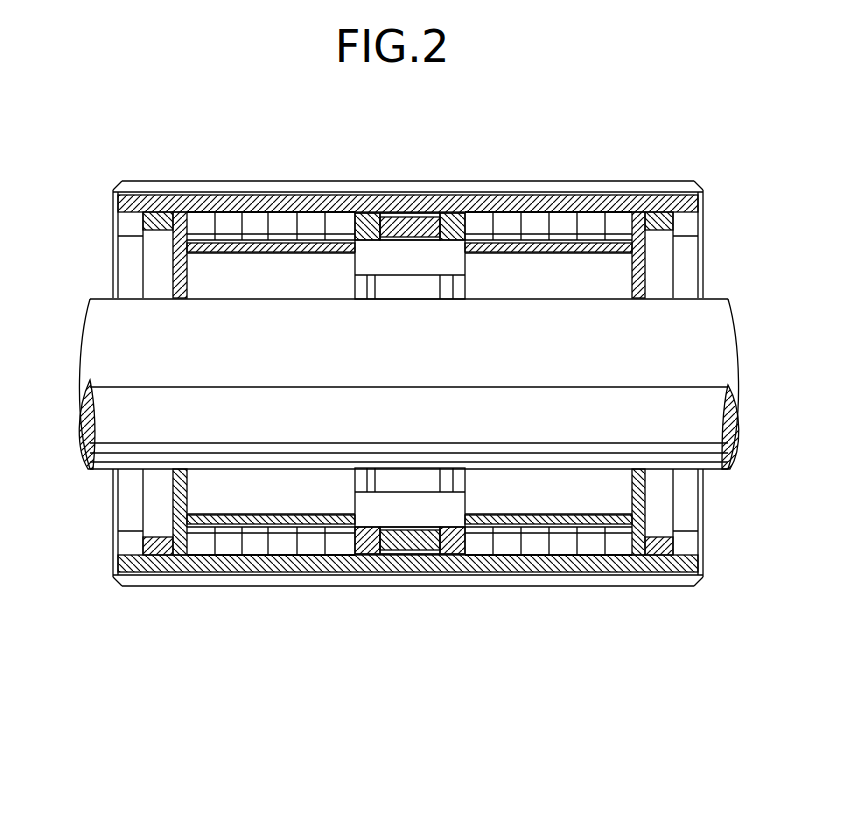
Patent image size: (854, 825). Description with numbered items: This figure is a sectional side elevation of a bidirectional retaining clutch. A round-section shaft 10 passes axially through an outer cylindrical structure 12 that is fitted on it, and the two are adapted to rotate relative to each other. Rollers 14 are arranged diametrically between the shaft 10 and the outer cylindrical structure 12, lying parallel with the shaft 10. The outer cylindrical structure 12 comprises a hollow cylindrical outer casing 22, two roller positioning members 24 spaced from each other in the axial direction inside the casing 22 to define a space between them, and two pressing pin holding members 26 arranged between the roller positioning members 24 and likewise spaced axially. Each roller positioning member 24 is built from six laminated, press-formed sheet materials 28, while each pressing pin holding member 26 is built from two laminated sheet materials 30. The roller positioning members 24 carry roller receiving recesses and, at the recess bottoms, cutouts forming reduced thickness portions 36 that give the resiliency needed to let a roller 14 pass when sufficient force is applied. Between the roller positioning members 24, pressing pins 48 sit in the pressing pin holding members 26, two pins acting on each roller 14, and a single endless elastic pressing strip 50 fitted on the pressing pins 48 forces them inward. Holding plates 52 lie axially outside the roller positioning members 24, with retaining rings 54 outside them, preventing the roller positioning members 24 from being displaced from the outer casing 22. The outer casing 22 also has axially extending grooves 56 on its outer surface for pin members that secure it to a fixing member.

The shaft 10 is at (100, 362).
The outer cylindrical structure 12 is at (673, 183).
The rollers 14 is at (253, 267).
The outer casing 22 is at (640, 181).
The roller positioning members 24 is at (280, 227).
The pressing pin holding members 26 is at (378, 187).
The sheet materials 30 is at (483, 394).
The sheet materials 28 is at (655, 630).
The reduced thickness portion 36 is at (140, 232).
The pressing pins 48 is at (350, 187).
The pressing strip 50 is at (427, 188).
The holding plates 52 is at (165, 577).
The retaining rings 54 is at (116, 578).
The axially extending grooves 56 is at (700, 190).